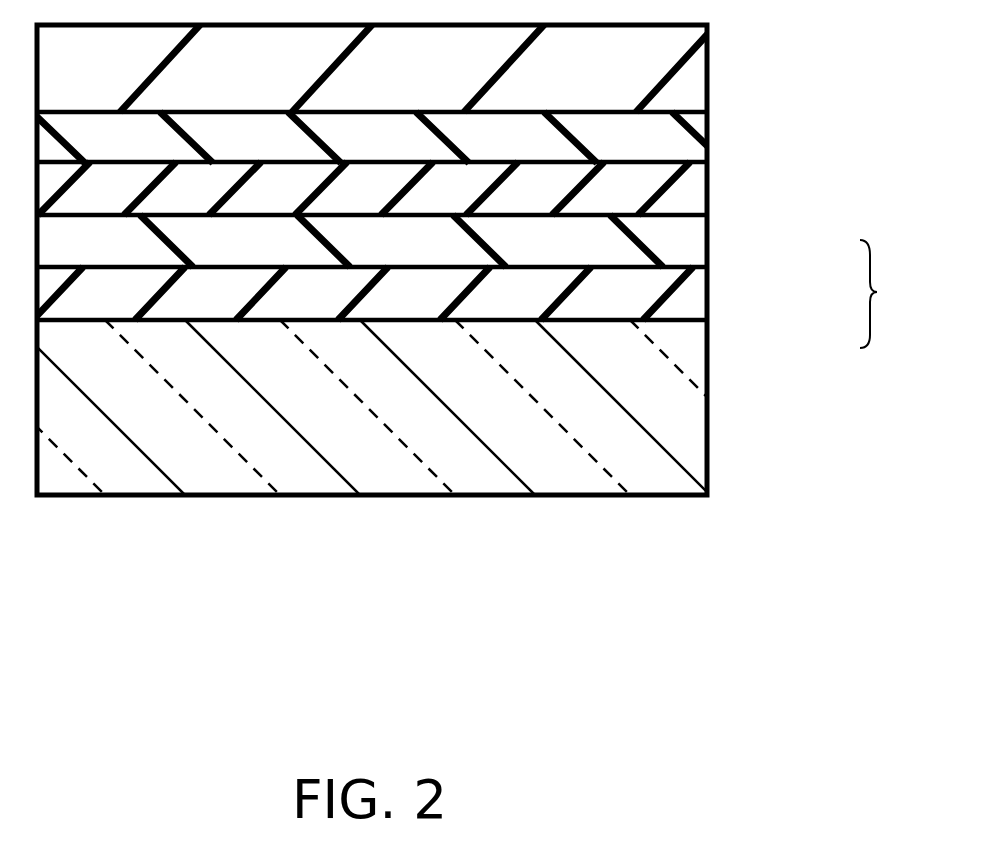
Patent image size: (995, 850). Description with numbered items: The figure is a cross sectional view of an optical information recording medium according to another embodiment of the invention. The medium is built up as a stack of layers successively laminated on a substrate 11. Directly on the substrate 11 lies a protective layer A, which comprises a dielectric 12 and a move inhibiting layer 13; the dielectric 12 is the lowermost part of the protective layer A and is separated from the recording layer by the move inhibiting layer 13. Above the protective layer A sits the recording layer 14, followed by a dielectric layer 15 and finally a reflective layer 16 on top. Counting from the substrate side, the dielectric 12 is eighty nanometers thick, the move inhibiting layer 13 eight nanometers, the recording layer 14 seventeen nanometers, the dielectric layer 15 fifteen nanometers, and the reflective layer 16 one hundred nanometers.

The substrate 11 is at (683, 408).
The dielectric 12 is at (687, 298).
The move inhibiting layer 13 is at (683, 242).
The recording layer 14 is at (688, 195).
The dielectric layer 15 is at (687, 145).
The reflective layer 16 is at (693, 80).
The protective layer A is at (881, 294).